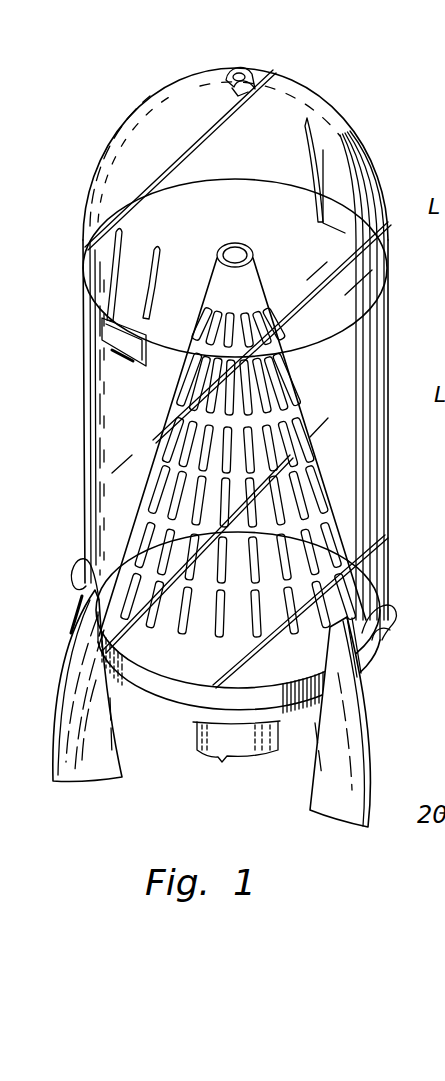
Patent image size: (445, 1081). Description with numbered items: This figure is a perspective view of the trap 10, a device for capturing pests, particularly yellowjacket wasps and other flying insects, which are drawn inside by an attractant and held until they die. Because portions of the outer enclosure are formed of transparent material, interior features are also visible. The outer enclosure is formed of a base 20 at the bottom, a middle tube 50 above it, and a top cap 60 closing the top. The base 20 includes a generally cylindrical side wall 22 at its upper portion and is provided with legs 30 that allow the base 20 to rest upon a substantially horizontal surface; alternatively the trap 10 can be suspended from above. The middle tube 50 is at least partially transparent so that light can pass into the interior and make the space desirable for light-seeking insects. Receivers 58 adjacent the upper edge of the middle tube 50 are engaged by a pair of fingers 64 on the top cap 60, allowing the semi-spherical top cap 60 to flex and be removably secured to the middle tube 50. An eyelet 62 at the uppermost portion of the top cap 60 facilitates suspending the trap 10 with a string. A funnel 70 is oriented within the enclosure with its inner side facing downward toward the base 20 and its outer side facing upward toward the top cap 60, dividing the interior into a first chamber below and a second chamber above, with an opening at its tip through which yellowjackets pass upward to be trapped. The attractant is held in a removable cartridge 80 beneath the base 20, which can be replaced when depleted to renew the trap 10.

The trap 10 is at (154, 67).
The base 20 is at (174, 757).
The side wall 22 is at (180, 703).
The legs 30 is at (340, 740).
The middle tube 50 is at (93, 388).
The receivers 58 is at (112, 333).
The top cap 60 is at (140, 138).
The eyelet 62 is at (253, 68).
The fingers 64 is at (128, 285).
The funnel 70 is at (330, 435).
The cartridge 80 is at (237, 782).